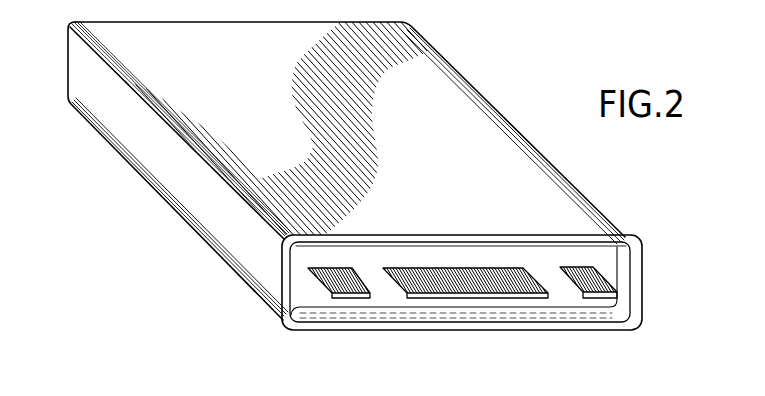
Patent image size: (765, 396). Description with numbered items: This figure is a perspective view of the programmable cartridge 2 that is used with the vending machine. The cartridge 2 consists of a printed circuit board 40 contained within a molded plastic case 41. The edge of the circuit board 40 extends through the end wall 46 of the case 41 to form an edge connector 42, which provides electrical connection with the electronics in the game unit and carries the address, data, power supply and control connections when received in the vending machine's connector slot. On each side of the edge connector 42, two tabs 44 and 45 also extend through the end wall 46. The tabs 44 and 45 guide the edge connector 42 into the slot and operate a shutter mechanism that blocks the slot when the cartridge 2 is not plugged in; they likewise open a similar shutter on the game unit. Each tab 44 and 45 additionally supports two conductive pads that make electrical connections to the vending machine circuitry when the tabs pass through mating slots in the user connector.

The programmable cartridge 2 is at (484, 79).
The molded plastic case 41 is at (251, 88).
The end wall 46 is at (436, 248).
The tab 44 is at (352, 299).
The printed circuit board 40 is at (458, 294).
The edge connector 42 is at (534, 298).
The tab 45 is at (603, 298).